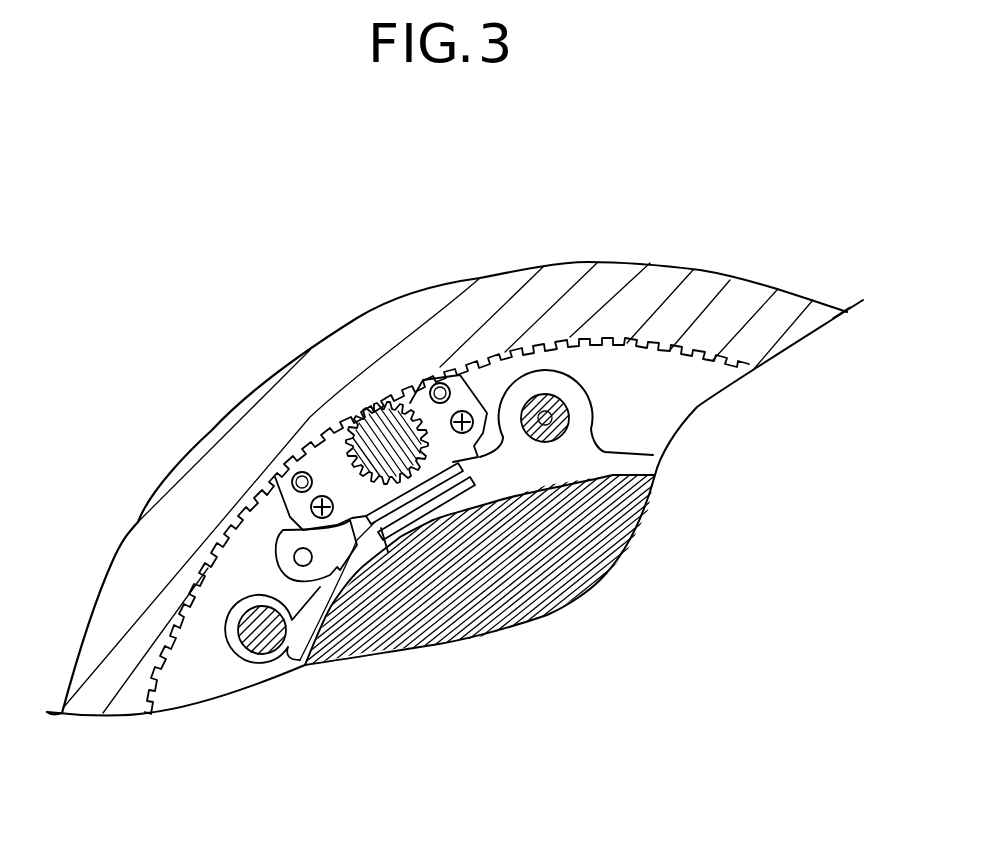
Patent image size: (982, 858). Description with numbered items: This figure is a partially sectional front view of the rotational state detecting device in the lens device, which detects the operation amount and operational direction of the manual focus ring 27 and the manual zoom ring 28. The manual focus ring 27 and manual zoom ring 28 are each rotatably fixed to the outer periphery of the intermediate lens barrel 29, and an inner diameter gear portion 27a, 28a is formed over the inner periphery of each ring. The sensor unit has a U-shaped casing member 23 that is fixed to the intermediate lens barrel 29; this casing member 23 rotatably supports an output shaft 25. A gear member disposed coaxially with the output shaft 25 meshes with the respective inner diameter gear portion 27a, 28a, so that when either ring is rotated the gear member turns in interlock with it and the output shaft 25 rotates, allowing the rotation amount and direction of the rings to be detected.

The casing member 23 is at (287, 543).
The output shaft 25 is at (328, 440).
The manual focus ring 27 is at (448, 459).
The manual zoom ring 28 is at (612, 270).
The inner diameter gear portion 27a is at (512, 526).
The inner diameter gear portion 28a is at (735, 361).
The intermediate lens barrel 29 is at (658, 438).